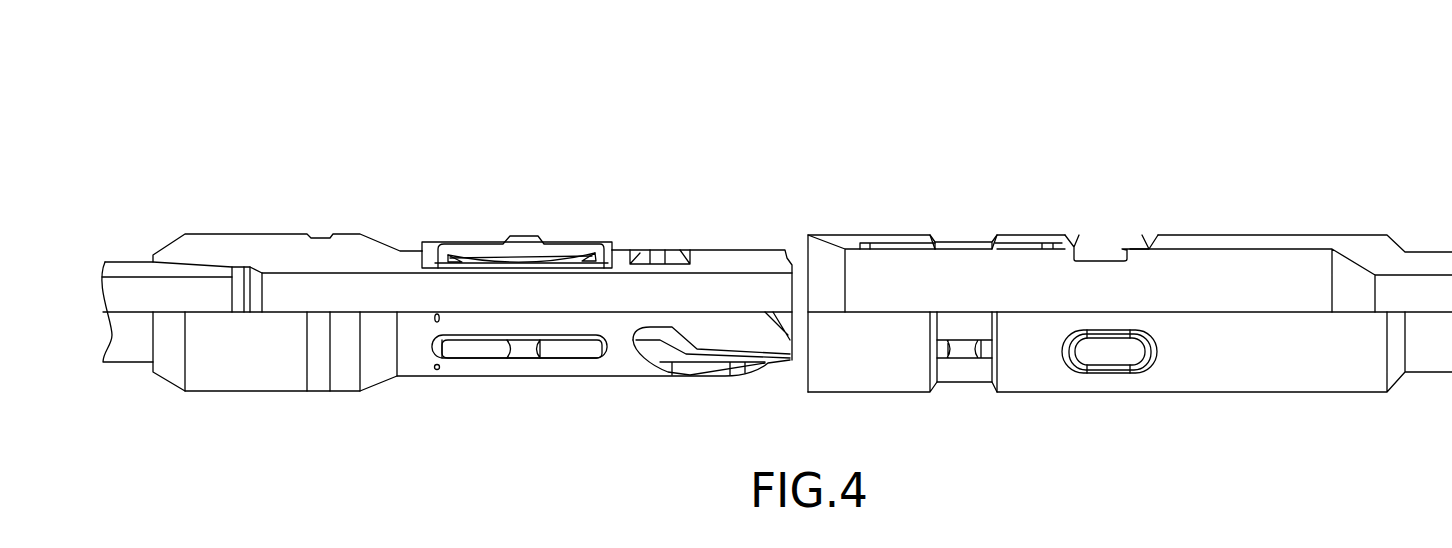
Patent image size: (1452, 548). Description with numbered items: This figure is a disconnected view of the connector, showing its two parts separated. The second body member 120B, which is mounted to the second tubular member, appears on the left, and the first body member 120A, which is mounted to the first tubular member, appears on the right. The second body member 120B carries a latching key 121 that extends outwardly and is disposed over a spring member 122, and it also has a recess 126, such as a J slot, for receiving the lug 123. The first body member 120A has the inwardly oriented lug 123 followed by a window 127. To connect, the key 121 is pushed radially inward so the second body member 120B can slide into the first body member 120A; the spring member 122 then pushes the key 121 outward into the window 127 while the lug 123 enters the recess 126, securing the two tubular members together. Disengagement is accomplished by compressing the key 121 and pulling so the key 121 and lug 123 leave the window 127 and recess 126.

The first body member 120A is at (1179, 155).
The second body member 120B is at (396, 155).
The latching key 121 is at (518, 232).
The spring member 122 is at (577, 238).
The lug 123 is at (1095, 235).
The recess 126 is at (656, 250).
The window 127 is at (967, 237).